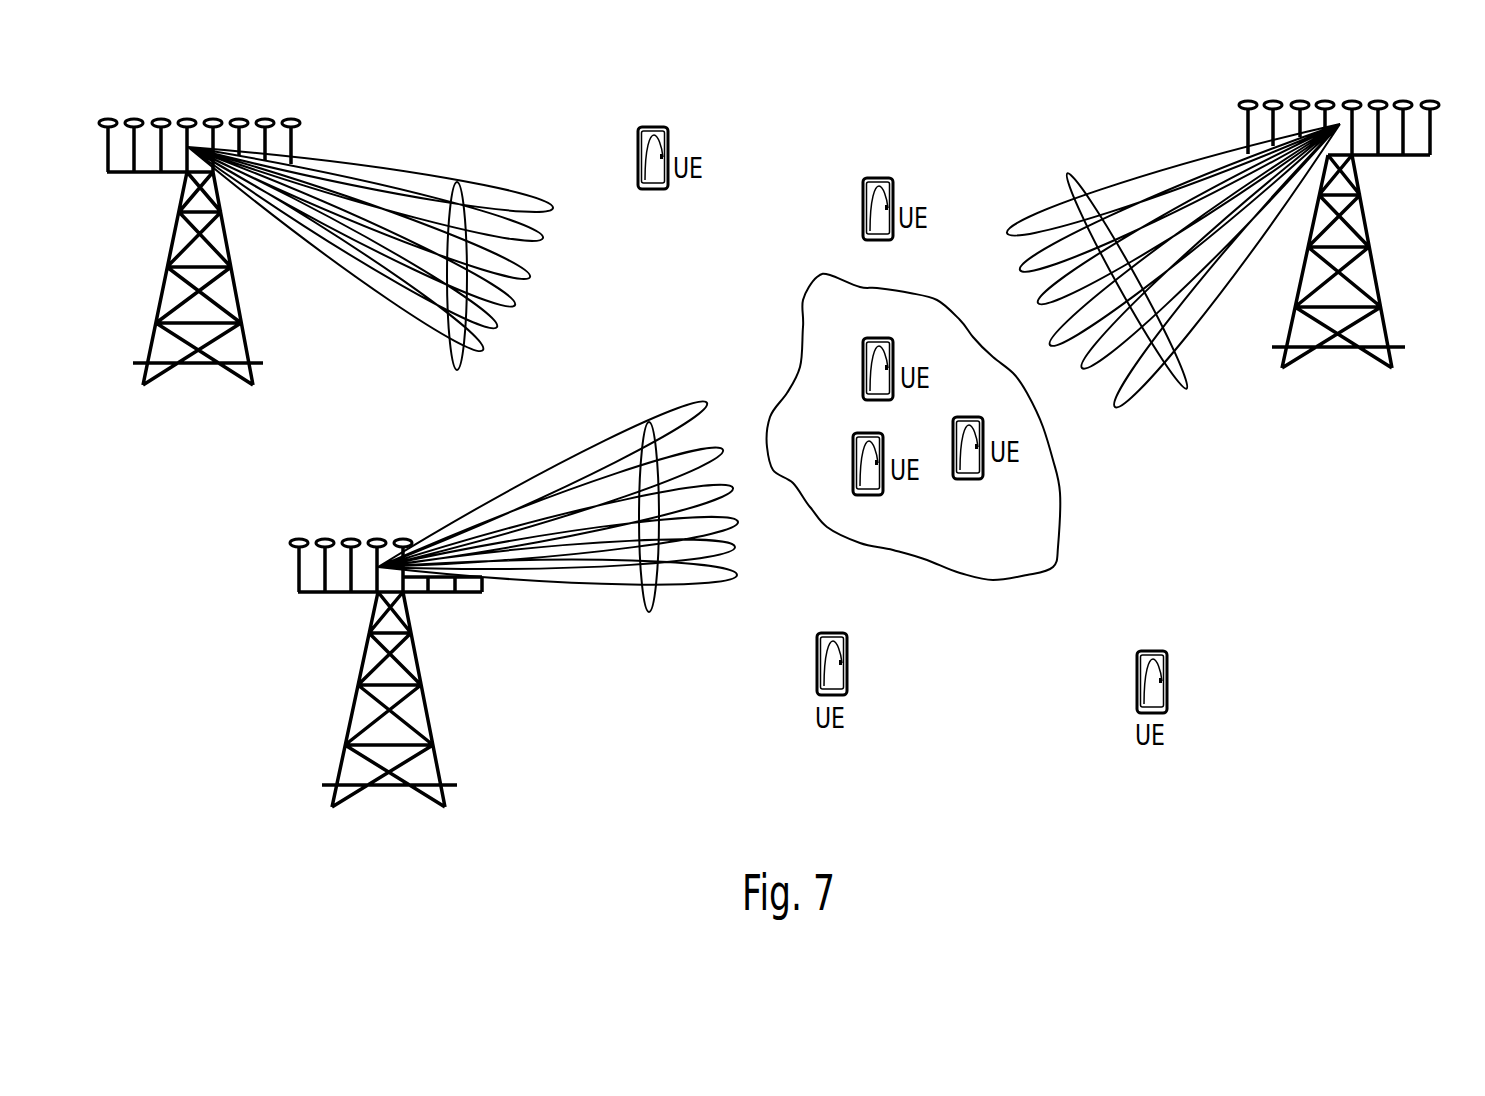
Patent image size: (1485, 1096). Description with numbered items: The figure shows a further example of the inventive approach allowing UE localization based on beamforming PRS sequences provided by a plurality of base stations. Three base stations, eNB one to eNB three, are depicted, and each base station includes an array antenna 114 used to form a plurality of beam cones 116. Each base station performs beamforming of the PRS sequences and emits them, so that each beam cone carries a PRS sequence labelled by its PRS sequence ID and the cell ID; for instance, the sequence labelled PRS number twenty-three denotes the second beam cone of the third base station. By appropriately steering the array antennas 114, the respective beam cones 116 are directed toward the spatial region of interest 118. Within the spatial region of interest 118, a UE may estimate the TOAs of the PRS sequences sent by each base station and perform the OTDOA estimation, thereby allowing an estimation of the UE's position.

The array antenna 114 is at (246, 100).
The beam cones 116 is at (764, 406).
The spatial region of interest 118 is at (1042, 553).